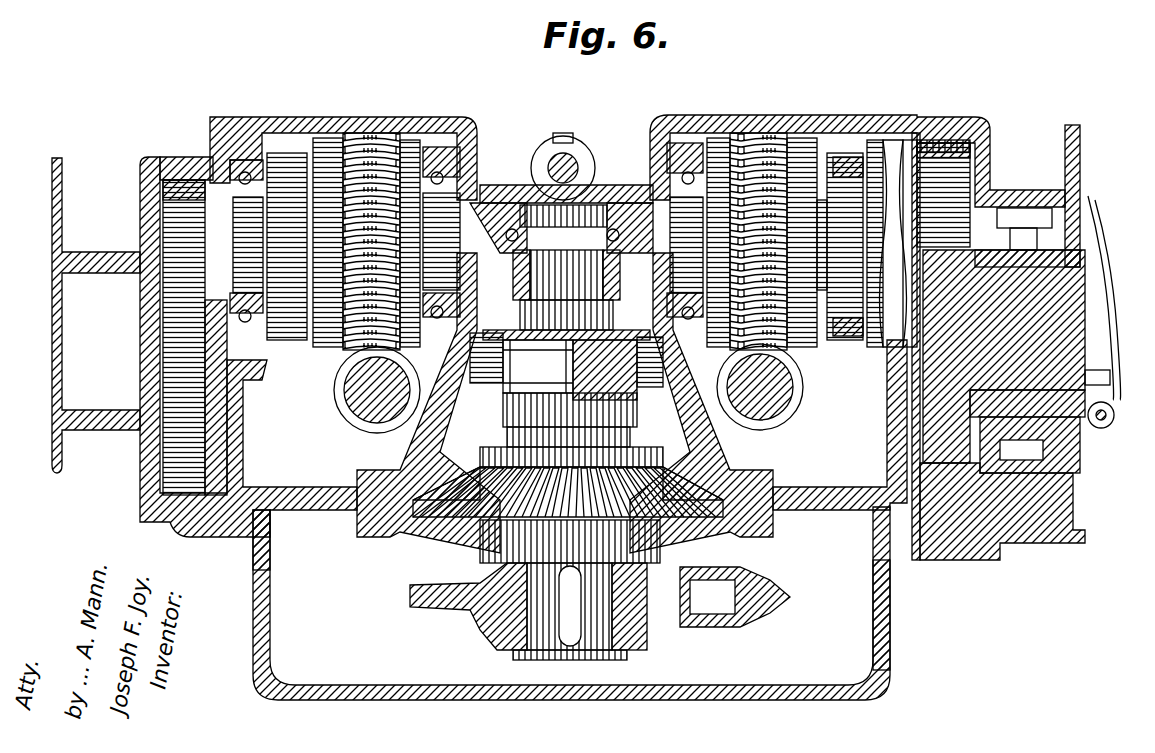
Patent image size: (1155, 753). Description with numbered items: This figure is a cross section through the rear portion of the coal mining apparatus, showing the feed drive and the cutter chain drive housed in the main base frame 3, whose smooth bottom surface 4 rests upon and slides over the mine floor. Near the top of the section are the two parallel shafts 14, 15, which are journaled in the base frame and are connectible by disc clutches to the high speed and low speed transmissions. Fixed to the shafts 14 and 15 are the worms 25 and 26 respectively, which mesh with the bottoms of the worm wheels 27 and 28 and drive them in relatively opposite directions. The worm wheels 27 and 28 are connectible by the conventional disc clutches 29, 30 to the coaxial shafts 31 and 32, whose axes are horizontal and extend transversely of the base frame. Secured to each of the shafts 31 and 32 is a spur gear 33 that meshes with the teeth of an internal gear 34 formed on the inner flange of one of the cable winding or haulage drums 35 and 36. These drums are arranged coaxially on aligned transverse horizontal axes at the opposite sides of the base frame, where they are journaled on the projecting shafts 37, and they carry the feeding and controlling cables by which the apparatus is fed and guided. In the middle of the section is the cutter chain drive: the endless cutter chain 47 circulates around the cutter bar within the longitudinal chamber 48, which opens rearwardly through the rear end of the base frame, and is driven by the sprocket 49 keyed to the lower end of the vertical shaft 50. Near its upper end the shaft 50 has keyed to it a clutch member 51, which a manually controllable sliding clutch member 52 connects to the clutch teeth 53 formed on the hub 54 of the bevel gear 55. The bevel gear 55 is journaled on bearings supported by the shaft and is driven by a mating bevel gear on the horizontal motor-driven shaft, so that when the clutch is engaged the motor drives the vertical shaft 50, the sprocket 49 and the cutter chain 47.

The main base frame 3 is at (255, 560).
The smooth bottom surface 4 is at (300, 690).
The shaft 14 is at (780, 380).
The shaft 15 is at (345, 388).
The worm 25 is at (795, 405).
The worm 26 is at (348, 408).
The worm wheel 27 is at (768, 150).
The worm wheel 28 is at (372, 155).
The disc clutch 29 is at (800, 160).
The disc clutch 30 is at (327, 167).
The shaft 31 is at (670, 280).
The shaft 32 is at (442, 265).
The spur gear 33 is at (170, 213).
The internal gear 34 is at (180, 183).
The cable winding drum 35 is at (1077, 152).
The cable winding drum 36 is at (52, 176).
The projecting shaft 37 is at (1057, 275).
The endless cutter chain 47 is at (772, 612).
The longitudinal chamber 48 is at (848, 630).
The sprocket 49 is at (460, 598).
The vertical shaft 50 is at (557, 620).
The clutch member 51 is at (612, 287).
The sliding clutch member 52 is at (635, 398).
The clutch teeth 53 is at (620, 413).
The hub 54 is at (510, 436).
The bevel gear 55 is at (452, 490).